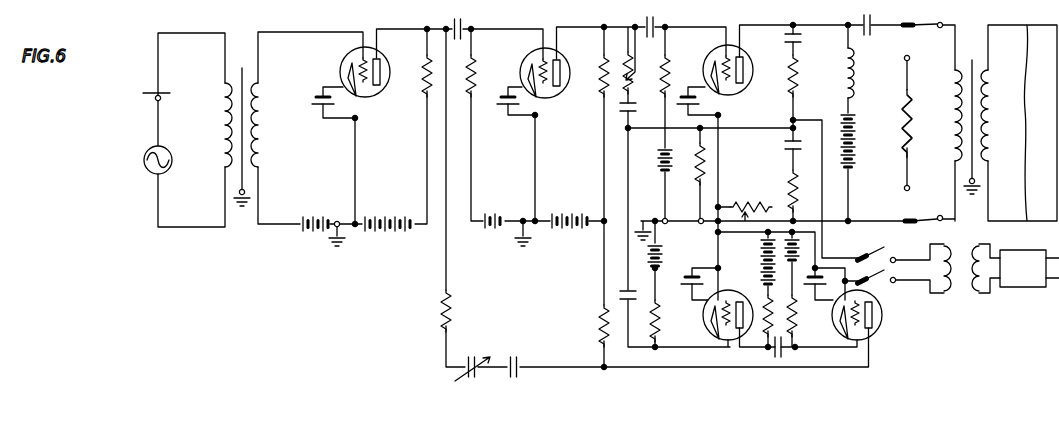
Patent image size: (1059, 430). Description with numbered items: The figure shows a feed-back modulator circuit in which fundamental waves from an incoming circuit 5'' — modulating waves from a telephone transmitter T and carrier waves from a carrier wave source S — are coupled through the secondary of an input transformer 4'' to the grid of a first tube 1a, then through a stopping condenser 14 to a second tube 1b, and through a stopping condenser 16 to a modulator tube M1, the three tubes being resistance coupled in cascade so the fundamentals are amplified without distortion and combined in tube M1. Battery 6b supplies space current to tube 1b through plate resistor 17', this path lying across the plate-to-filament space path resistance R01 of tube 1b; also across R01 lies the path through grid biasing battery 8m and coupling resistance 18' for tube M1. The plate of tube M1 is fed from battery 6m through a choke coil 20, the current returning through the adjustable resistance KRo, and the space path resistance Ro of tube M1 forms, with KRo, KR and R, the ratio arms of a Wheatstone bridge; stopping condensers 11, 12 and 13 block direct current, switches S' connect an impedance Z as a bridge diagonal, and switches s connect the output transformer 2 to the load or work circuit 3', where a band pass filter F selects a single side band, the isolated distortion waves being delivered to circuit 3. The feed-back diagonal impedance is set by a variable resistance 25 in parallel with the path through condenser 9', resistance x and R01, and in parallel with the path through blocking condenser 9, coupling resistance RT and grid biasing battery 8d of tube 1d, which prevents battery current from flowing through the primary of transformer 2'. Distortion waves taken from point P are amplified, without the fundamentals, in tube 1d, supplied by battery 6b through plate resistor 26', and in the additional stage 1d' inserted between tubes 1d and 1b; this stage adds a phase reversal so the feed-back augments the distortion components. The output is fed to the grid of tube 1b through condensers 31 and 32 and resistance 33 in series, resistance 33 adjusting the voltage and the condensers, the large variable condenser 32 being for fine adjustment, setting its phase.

The incoming circuit 5'' is at (206, 132).
The input transformer 4'' is at (245, 107).
The telephone transmitter T is at (162, 95).
The carrier wave source S is at (166, 161).
The first tube 1a is at (345, 60).
The stopping condenser 14 is at (456, 27).
The second tube 1b is at (528, 62).
The plate-to-filament space path resistance of tube 1b R01 is at (559, 92).
The battery 6b is at (568, 219).
The plate resistor 17' is at (592, 66).
The resistance x is at (621, 76).
The input or coupling resistance 18' is at (645, 83).
The stopping condenser 9' is at (613, 139).
The point P is at (632, 131).
The grid biasing battery 8m is at (664, 173).
The variable resistance 25 is at (700, 177).
The stopping condenser 16 is at (651, 28).
The modulator tube M1 is at (716, 58).
The plate-to-filament space path resistance of tube M1 Ro is at (741, 85).
The stopping condenser 12 is at (793, 40).
The resistance R is at (799, 68).
The stopping condenser 13 is at (789, 146).
The resistance KR is at (793, 179).
The adjustable resistance KRo is at (751, 200).
The grid biasing battery 8d is at (664, 258).
The input or coupling resistance RT is at (658, 311).
The distortionless amplifier tube 1d is at (717, 310).
The plate resistor 26' is at (671, 293).
The blocking condenser 9 is at (623, 285).
The resistance 33 is at (455, 301).
The variable condenser 32 is at (470, 357).
The condenser 31 is at (515, 357).
The additional stage 1d' is at (842, 310).
The switches s is at (870, 256).
The switches S' is at (923, 120).
The stopping condenser 11 is at (869, 27).
The output transformer 2 is at (971, 80).
The load circuit 3 is at (1020, 97).
The choke coil 20 is at (854, 57).
The impedance Z is at (903, 99).
The battery 6m is at (856, 158).
The transformer 2' is at (953, 287).
The load or work circuit 3' is at (988, 275).
The band pass filter F is at (1028, 290).